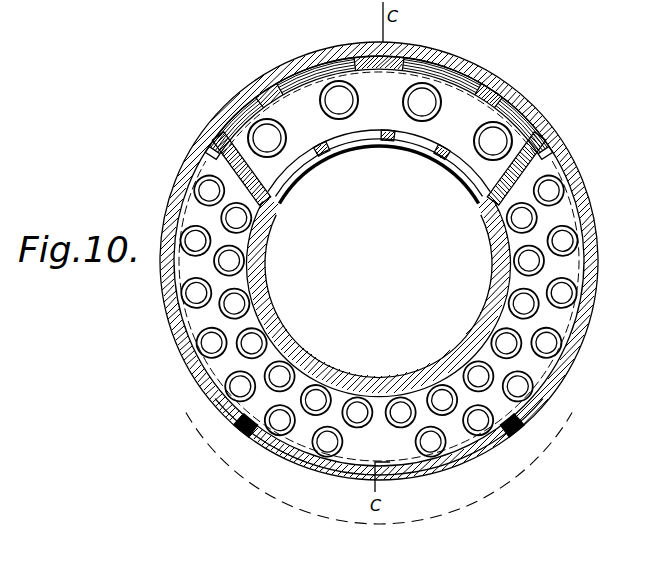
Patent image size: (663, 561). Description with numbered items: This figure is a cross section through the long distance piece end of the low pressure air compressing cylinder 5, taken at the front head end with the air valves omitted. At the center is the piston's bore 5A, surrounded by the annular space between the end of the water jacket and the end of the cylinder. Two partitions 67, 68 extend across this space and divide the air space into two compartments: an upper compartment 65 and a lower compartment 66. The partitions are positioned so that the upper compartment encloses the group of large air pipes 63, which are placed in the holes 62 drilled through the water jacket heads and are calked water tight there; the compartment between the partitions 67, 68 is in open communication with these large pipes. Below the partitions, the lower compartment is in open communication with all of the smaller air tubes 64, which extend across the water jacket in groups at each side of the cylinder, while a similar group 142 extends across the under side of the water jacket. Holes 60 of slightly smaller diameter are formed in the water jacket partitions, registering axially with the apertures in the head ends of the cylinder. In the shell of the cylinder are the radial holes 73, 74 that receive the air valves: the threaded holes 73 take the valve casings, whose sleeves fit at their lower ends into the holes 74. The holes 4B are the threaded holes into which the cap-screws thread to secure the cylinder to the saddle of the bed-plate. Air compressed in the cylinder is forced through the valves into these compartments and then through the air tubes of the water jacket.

The low pressure air compressing cylinder 5 is at (168, 321).
The bore 5A is at (400, 275).
The radial holes 73 is at (248, 104).
The compartment 65 is at (378, 113).
The air tubes 63 is at (329, 116).
The holes 62 is at (380, 120).
The holes 74 is at (288, 182).
The partition 67 is at (213, 162).
The partition 68 is at (560, 165).
The holes 60 is at (231, 308).
The smaller air tubes 64 is at (226, 229).
The compartment 66 is at (365, 441).
The holes 4B is at (523, 442).
The group of smaller air tubes 142 is at (379, 479).